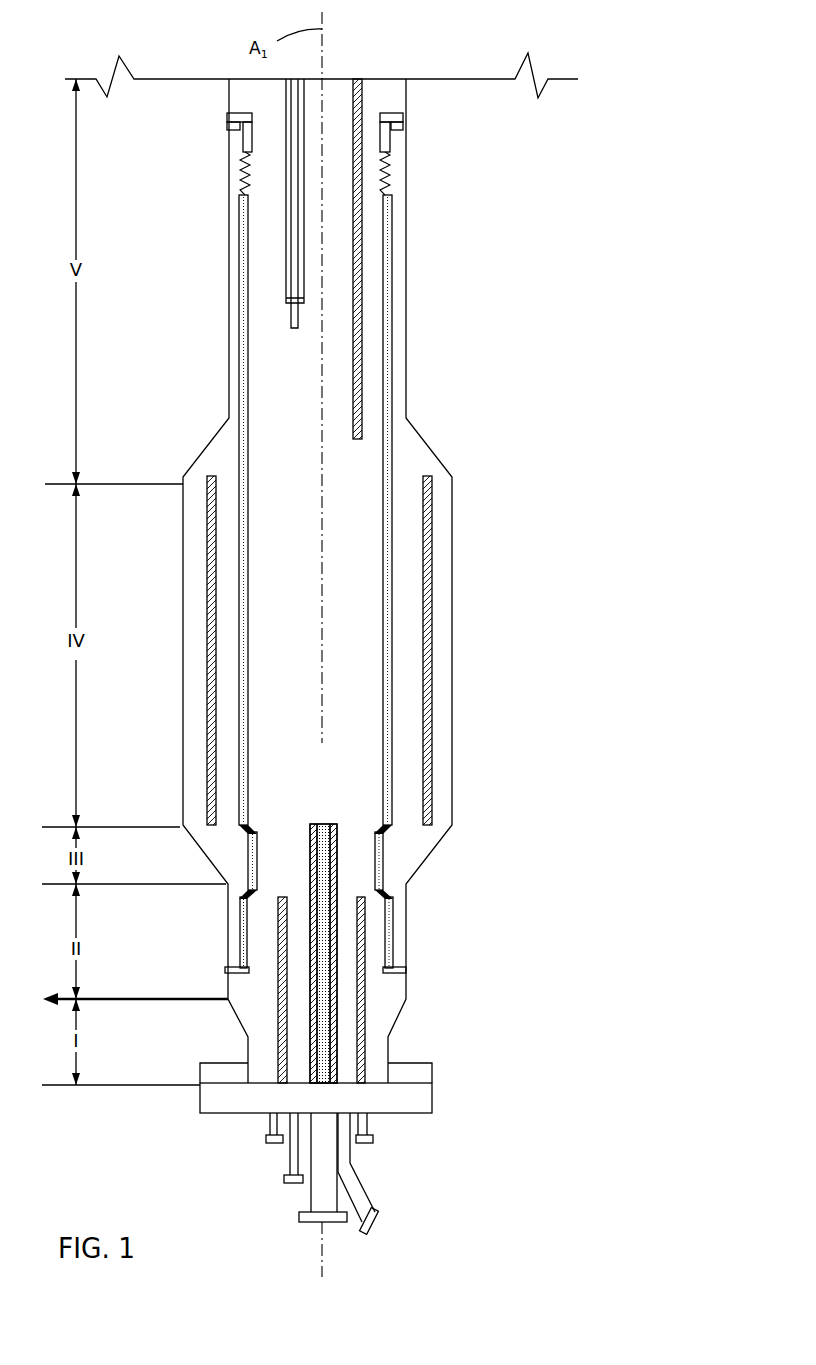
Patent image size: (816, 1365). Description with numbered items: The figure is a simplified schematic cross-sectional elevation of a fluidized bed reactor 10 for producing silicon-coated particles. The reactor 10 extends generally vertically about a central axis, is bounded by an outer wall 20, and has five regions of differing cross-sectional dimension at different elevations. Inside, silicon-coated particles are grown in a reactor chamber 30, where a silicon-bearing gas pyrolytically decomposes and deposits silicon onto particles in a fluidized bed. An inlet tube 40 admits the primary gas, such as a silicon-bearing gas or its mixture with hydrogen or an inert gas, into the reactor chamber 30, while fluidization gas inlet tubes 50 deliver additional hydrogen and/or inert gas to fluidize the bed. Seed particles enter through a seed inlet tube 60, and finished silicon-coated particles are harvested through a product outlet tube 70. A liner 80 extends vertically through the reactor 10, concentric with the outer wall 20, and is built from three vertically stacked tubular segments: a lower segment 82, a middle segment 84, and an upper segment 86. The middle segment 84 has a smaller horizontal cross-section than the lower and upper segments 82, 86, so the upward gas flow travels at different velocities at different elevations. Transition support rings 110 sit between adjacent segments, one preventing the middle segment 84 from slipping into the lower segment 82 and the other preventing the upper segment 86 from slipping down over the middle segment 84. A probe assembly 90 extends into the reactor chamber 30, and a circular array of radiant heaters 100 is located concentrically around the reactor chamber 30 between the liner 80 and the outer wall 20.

The fluidized bed reactor 10 is at (357, 58).
The outer wall 20 is at (453, 725).
The reactor chamber 30 is at (285, 651).
The inlet tube 40 is at (330, 823).
The fluidization gas inlet tube 50 is at (283, 893).
The seed inlet tube 60 is at (360, 442).
The product outlet tube 70 is at (382, 1217).
The liner 80 is at (387, 333).
The lower segment 82 is at (393, 923).
The middle segment 84 is at (384, 867).
The upper segment 86 is at (392, 450).
The probe assembly 90 is at (286, 105).
The heater 100 is at (208, 578).
The transition support ring 110 is at (386, 828).